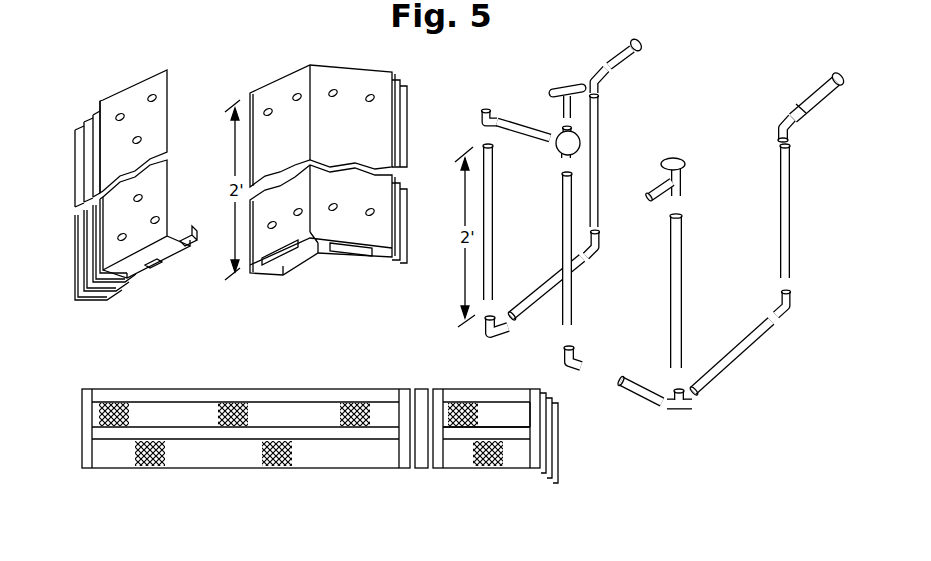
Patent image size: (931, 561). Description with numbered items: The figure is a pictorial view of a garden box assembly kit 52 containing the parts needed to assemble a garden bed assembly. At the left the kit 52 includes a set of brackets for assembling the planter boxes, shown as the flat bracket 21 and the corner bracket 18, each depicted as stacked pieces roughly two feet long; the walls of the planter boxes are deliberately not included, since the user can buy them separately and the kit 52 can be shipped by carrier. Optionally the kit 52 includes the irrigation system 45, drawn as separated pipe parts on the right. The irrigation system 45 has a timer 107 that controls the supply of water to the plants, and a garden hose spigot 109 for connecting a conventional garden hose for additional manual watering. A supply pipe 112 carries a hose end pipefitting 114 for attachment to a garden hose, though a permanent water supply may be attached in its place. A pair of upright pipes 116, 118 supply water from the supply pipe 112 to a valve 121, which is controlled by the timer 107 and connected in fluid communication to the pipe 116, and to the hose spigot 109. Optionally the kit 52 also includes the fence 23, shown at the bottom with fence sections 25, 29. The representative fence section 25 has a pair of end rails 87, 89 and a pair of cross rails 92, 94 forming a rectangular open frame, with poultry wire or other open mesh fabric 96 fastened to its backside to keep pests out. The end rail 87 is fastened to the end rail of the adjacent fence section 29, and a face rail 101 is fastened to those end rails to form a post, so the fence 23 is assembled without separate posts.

The kit 52 is at (38, 127).
The bracket 21 is at (123, 272).
The bracket 18 is at (382, 254).
The timer 107 is at (570, 88).
The valve 121 is at (555, 132).
The garden hose spigot 109 is at (673, 158).
The hose end pipefitting 114 is at (825, 83).
The upright pipe 118 is at (684, 278).
The upright pipe 116 is at (573, 288).
The supply pipe 112 is at (738, 346).
The irrigation system 45 is at (538, 334).
The cross rail 94 is at (487, 432).
The cross rail 92 is at (495, 396).
The end rail 89 is at (530, 412).
The open mesh fabric 96 is at (500, 468).
The fence section 25 is at (518, 470).
The end rail 87 is at (495, 438).
The face rail 101 is at (419, 470).
The fence section 29 is at (206, 476).
The fence 23 is at (246, 455).